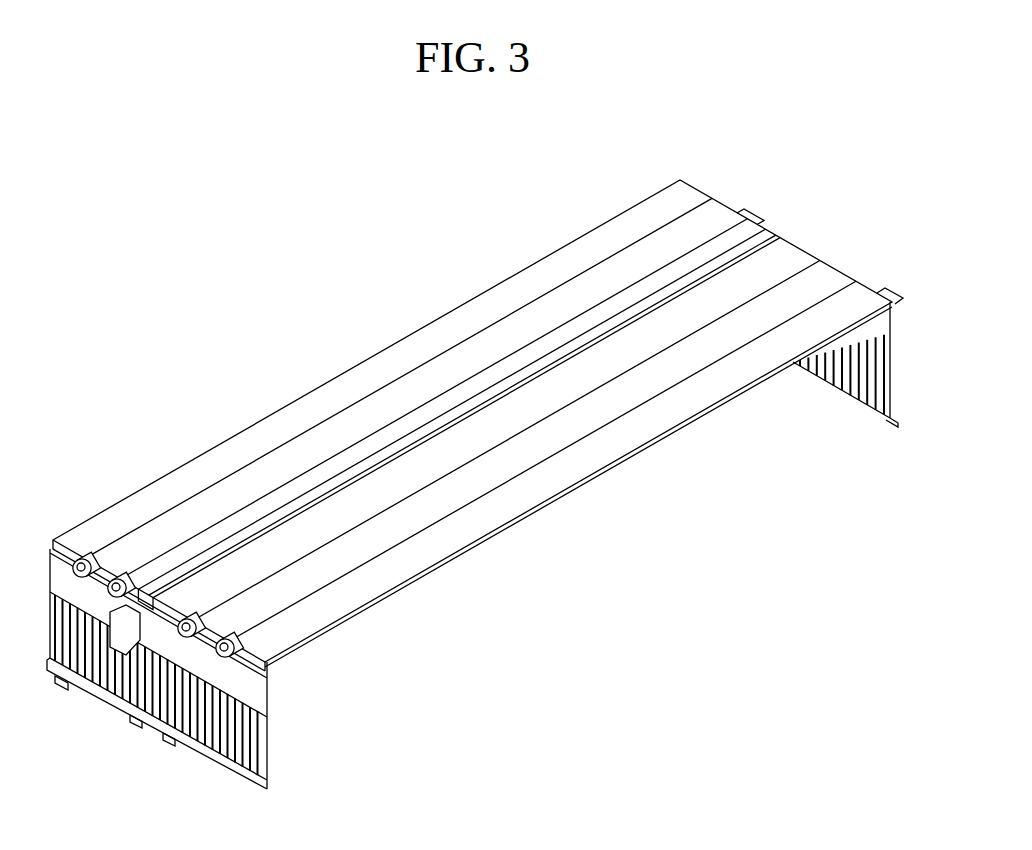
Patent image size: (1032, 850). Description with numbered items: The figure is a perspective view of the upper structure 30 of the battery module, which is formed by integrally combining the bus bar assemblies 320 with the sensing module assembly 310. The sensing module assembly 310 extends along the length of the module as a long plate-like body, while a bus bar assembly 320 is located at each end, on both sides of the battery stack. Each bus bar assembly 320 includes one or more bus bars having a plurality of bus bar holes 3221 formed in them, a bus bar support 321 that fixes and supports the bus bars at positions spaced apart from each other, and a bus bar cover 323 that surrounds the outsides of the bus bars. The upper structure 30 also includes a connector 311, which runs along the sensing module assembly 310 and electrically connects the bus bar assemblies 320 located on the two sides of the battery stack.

The upper structure 30 is at (80, 162).
The sensing module assembly 310 is at (226, 431).
The connector 311 is at (447, 424).
The bus bar assembly 320 is at (472, 545).
The bus bar support 321 is at (262, 702).
The bus bar cover 323 is at (258, 689).
The bus bar holes 3221 is at (260, 737).